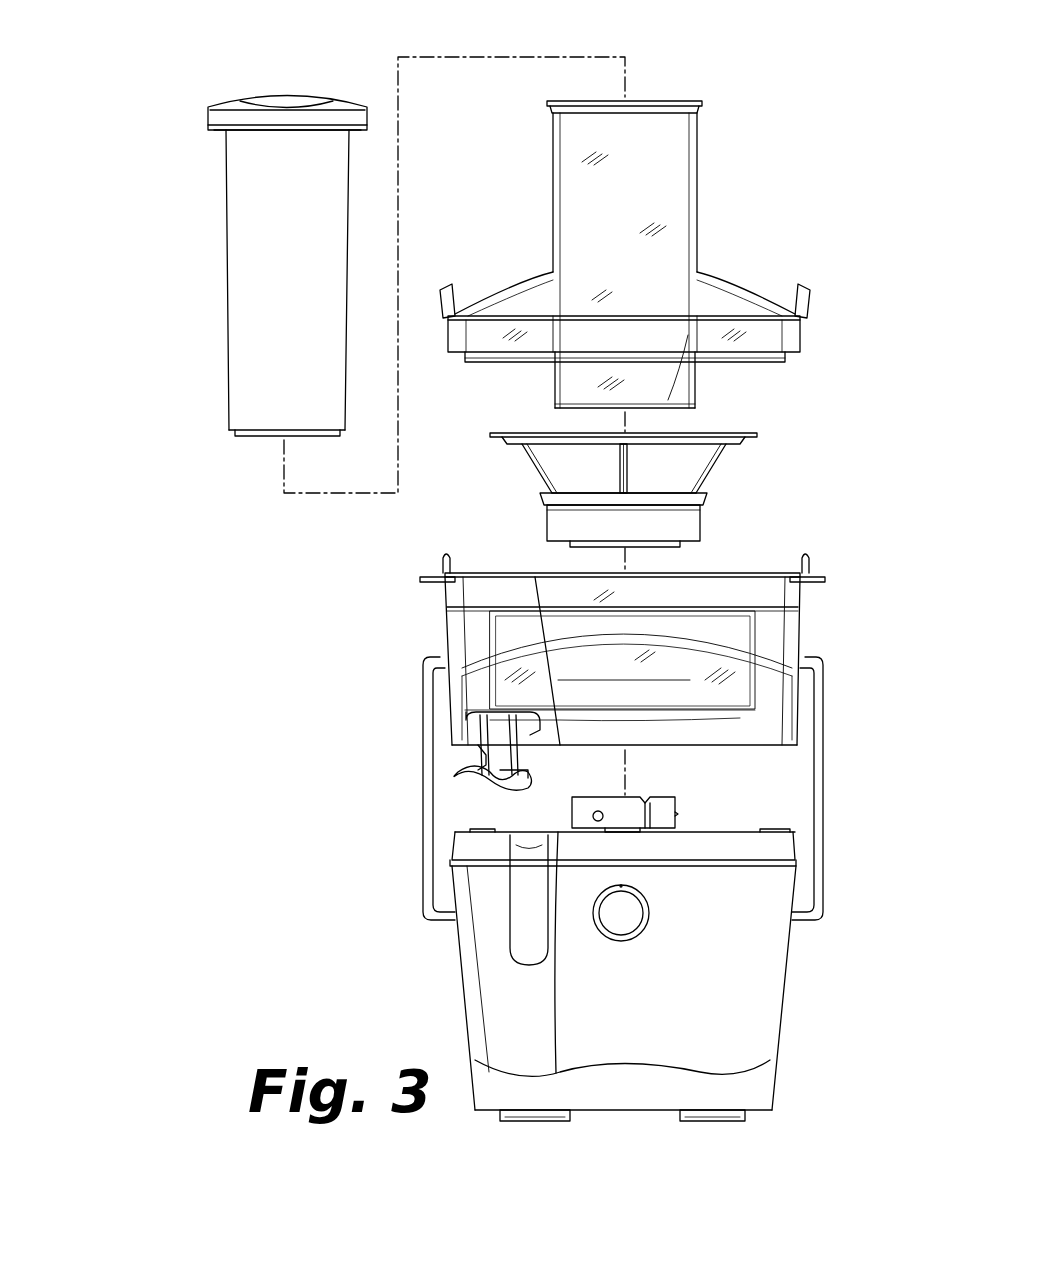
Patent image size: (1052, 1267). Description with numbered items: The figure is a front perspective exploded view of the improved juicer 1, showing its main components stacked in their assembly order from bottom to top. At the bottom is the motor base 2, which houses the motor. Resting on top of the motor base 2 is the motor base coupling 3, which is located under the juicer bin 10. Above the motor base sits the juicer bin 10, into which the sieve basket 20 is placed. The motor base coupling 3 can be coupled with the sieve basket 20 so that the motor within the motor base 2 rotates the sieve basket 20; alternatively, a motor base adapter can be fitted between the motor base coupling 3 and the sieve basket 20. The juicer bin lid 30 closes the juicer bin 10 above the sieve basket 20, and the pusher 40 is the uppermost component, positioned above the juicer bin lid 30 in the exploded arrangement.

The improved juicer 1 is at (188, 212).
The motor base 2 is at (462, 1013).
The motor base coupling 3 is at (572, 810).
The juicer bin 10 is at (805, 630).
The sieve basket 20 is at (700, 483).
The juicer bin lid 30 is at (697, 228).
The pusher 40 is at (226, 309).